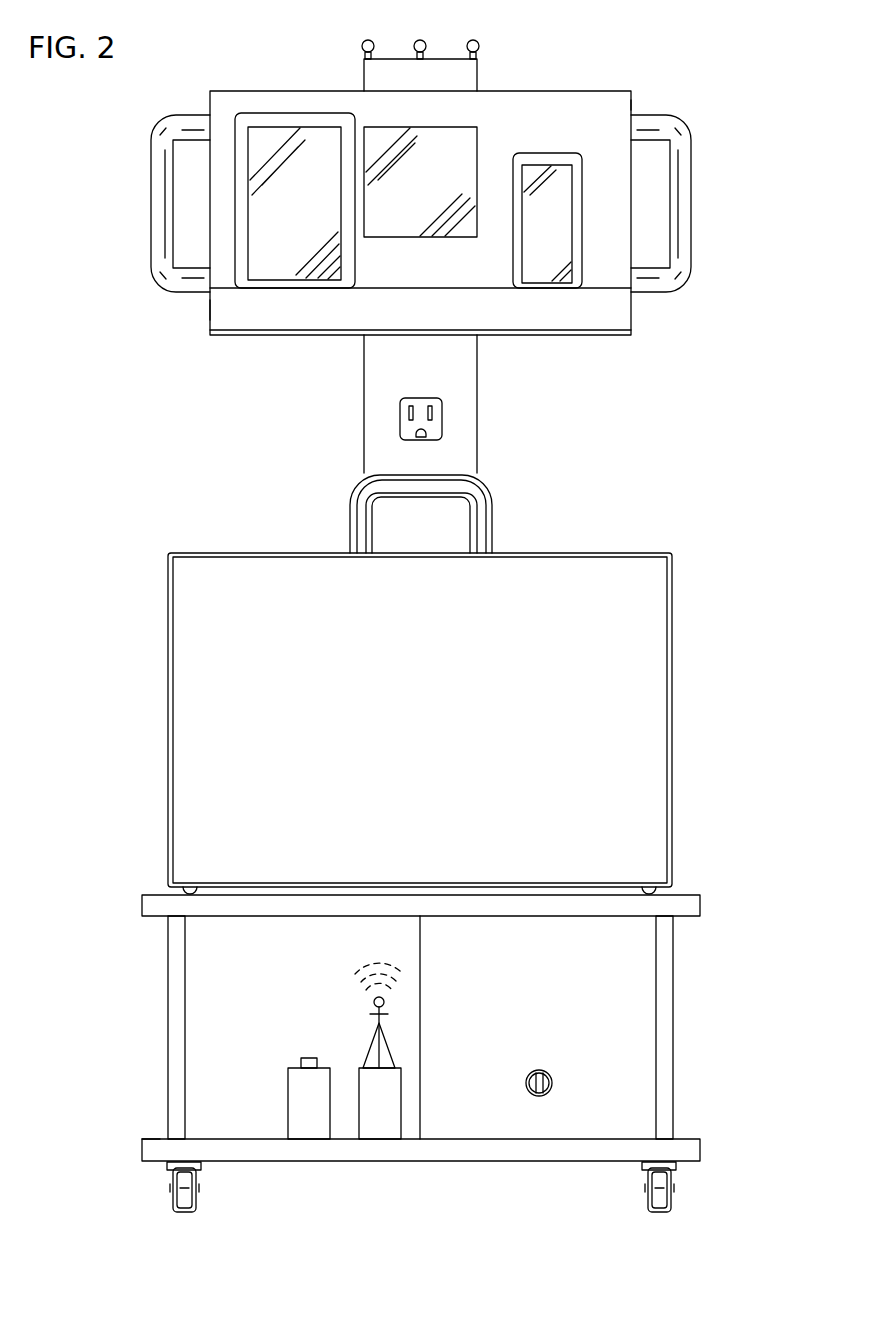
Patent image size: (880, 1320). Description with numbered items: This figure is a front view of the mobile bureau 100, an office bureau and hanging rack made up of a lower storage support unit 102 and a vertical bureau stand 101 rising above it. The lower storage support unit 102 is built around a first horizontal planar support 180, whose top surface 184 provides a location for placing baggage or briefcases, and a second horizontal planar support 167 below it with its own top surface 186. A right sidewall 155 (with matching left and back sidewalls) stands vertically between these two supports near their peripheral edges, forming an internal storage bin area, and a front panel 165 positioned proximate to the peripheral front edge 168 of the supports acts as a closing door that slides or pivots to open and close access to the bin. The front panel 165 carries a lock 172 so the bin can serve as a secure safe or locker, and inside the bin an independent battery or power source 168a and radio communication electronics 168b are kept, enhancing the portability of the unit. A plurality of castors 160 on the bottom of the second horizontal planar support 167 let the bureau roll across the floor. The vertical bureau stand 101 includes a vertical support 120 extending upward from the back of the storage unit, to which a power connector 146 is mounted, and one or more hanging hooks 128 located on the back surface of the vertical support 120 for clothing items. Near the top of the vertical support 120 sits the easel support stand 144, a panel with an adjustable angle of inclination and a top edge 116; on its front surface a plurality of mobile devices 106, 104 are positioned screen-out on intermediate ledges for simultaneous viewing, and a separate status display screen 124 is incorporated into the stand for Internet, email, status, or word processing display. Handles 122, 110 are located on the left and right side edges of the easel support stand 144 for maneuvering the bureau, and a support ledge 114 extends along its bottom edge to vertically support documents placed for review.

The mobile bureau 100 is at (752, 53).
The vertical bureau stand 101 is at (120, 153).
The lower storage support unit 102 is at (135, 1051).
The mobile device 104 is at (548, 153).
The mobile device 106 is at (311, 217).
The handle 110 is at (692, 200).
The support ledge 114 is at (210, 312).
The top edge 116 is at (583, 91).
The vertical support 120 is at (363, 80).
The handle 122 is at (150, 200).
The status display screen 124 is at (438, 197).
The hanging hook 128 is at (362, 45).
The easel support stand 144 is at (633, 105).
The power connector 146 is at (442, 422).
The right sidewall 155 is at (673, 1027).
The castor 160 is at (167, 1189).
The front panel 165 is at (556, 1041).
The second horizontal planar support 167 is at (700, 1149).
The peripheral front edge 168 is at (257, 1151).
The independent battery 168a is at (302, 1058).
The radio communication electronics 168b is at (401, 1103).
The lock 172 is at (553, 1083).
The first horizontal planar support 180 is at (700, 905).
The top surface 184 is at (152, 893).
The top surface 186 is at (152, 1138).